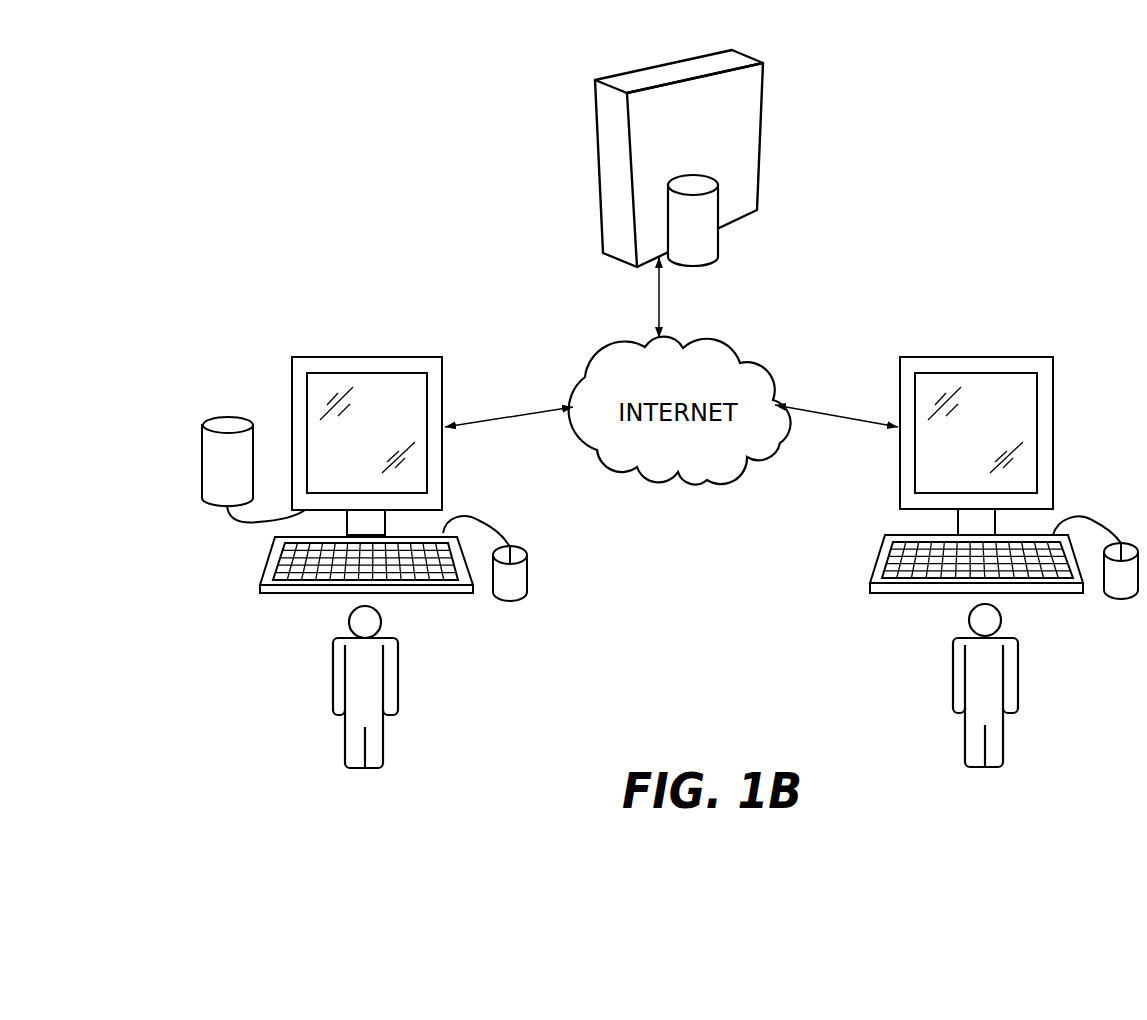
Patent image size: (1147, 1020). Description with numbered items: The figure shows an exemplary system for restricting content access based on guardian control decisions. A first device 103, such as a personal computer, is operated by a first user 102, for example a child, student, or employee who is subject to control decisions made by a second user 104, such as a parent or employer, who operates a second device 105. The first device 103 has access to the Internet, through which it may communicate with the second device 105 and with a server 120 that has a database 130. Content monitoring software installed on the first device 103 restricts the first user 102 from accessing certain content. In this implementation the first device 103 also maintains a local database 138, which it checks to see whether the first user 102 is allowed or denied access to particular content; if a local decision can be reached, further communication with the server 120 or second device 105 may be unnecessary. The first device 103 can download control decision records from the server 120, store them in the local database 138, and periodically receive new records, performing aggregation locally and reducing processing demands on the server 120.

The server 120 is at (630, 70).
The database 130 is at (708, 247).
The first device 103 is at (397, 322).
The local database 138 is at (193, 430).
The first user 102 is at (332, 653).
The second device 105 is at (978, 322).
The second user 104 is at (952, 653).